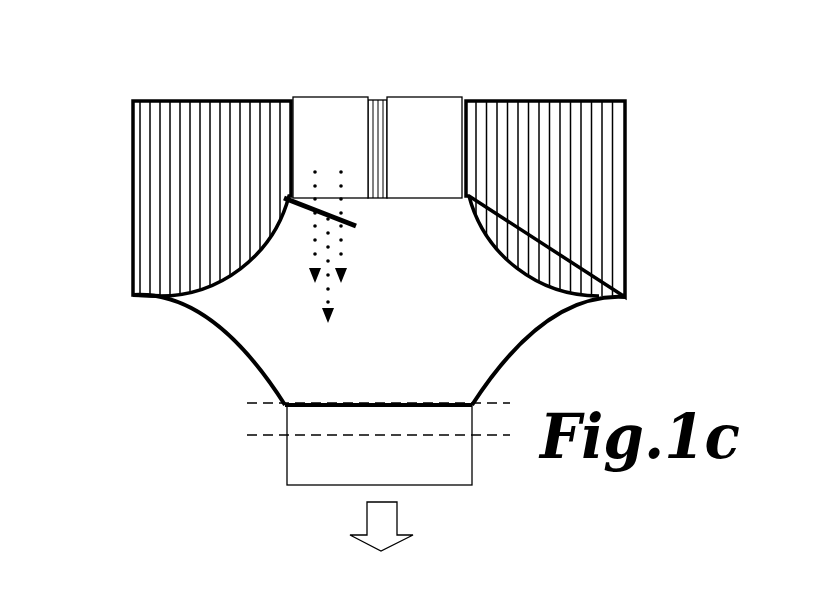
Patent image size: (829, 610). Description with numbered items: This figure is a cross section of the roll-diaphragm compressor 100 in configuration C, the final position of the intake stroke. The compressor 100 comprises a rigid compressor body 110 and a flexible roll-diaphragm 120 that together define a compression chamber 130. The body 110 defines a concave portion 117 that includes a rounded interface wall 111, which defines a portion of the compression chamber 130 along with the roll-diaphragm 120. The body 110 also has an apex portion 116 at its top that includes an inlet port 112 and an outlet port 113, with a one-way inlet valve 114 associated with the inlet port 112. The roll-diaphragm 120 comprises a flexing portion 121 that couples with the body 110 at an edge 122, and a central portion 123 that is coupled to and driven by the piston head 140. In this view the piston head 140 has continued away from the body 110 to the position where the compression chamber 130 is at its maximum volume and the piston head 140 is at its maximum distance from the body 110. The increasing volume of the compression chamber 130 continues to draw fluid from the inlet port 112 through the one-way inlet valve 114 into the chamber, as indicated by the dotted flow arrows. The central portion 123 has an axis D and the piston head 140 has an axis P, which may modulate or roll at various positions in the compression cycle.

The roll-diaphragm compressor 100 is at (664, 84).
The compressor body 110 is at (130, 197).
The rounded interface wall 111 is at (245, 280).
The inlet port 112 is at (322, 97).
The outlet port 113 is at (432, 97).
The one-way inlet valve 114 is at (357, 224).
The apex portion 116 is at (457, 205).
The concave portion 117 is at (440, 282).
The roll-diaphragm 120 is at (232, 345).
The flexing portion 121 is at (185, 313).
The edge 122 is at (132, 295).
The central portion 123 is at (390, 403).
The compression chamber 130 is at (470, 340).
The piston head 140 is at (283, 448).